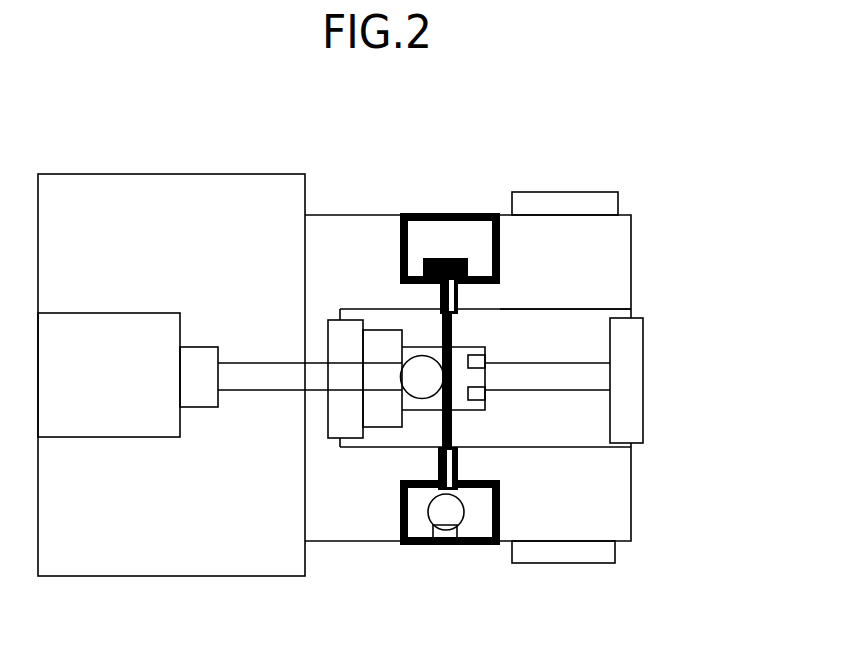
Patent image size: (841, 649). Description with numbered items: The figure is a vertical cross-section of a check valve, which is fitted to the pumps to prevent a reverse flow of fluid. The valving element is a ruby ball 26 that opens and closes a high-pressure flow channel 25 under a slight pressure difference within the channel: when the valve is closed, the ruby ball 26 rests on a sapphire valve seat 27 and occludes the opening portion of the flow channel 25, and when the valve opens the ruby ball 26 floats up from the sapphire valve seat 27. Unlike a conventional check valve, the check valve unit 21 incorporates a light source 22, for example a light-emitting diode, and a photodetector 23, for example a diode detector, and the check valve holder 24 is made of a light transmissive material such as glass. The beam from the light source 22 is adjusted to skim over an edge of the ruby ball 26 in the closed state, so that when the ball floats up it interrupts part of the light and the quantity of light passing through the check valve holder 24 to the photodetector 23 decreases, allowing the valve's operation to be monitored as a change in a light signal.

The check valve unit 21 is at (631, 541).
The light source 22 is at (475, 545).
The photodetector 23 is at (474, 213).
The check valve holder 24 is at (547, 310).
The flow channel 25 is at (258, 372).
The ruby ball 26 is at (417, 354).
The sapphire valve seat 27 is at (373, 333).